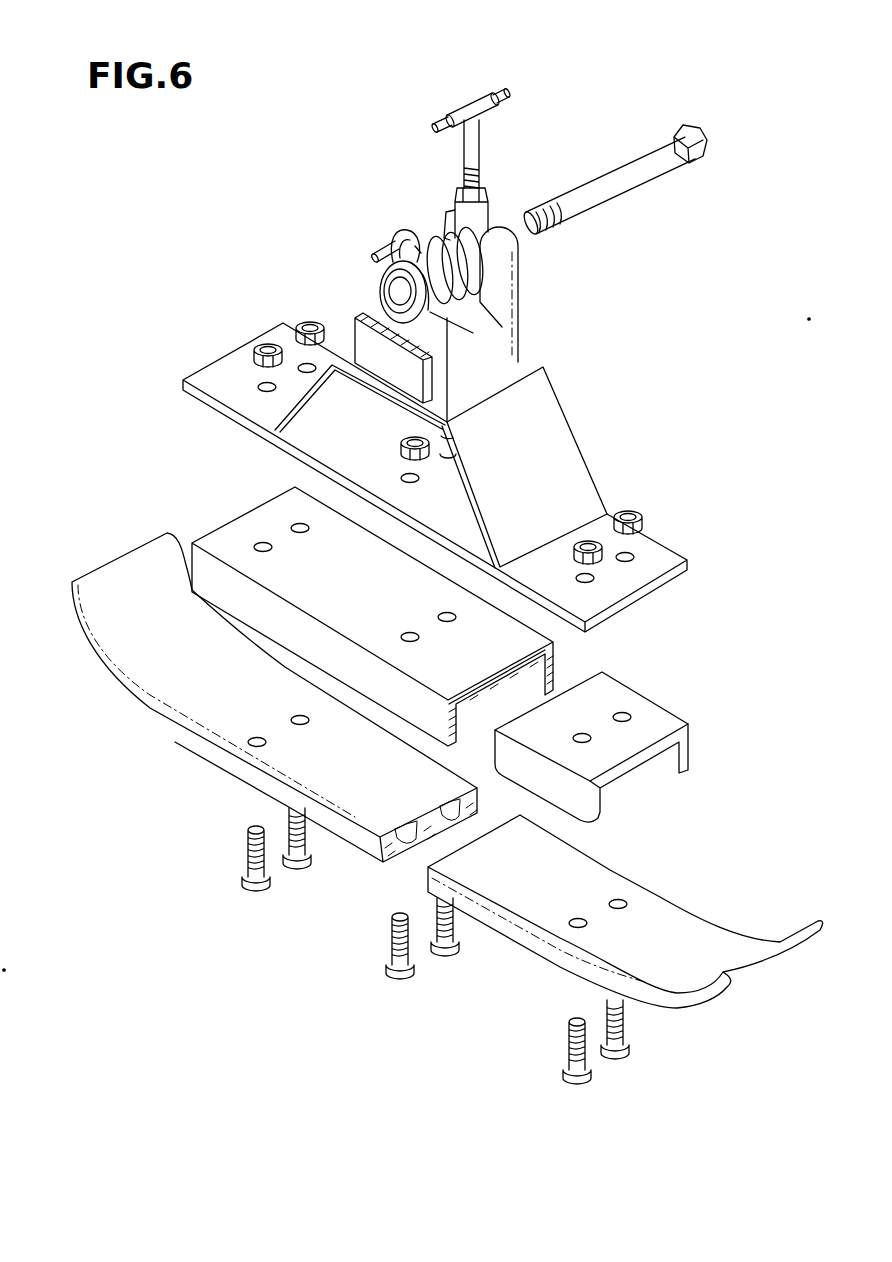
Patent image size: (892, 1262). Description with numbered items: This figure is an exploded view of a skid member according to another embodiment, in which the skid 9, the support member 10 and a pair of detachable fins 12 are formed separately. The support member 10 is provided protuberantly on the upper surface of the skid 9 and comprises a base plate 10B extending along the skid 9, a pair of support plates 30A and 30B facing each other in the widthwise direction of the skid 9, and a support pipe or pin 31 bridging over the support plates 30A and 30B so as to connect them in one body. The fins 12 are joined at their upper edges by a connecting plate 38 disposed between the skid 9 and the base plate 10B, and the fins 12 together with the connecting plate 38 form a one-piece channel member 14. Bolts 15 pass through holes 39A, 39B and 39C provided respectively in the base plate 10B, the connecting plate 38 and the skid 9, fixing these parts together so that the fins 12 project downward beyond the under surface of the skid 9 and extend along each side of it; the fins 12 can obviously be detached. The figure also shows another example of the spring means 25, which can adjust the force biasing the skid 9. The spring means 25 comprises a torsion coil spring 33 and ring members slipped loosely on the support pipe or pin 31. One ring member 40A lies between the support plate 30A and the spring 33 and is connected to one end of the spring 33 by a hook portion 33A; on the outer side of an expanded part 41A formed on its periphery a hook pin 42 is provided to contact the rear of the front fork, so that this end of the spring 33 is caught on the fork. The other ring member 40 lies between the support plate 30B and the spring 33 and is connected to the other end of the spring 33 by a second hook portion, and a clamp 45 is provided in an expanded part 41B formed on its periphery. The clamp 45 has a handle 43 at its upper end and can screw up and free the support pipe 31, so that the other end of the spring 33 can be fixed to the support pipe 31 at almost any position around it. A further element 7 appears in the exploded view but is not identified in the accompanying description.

The bolt 7 is at (617, 190).
The skid 9 is at (213, 713).
The support member 10 is at (587, 443).
The base plate 10B is at (663, 567).
The fins 12 is at (597, 810).
The channel member 14 is at (666, 729).
The bolts 15 is at (390, 957).
The spring means 25 is at (405, 92).
The support plate 30A is at (358, 340).
The support plate 30B is at (503, 297).
The support pipe or pin 31 is at (368, 292).
The torsion coil spring 33 is at (430, 243).
The hook portion 33A is at (418, 250).
The connecting plate 38 is at (655, 728).
The hole 39A is at (630, 550).
The hole 39B is at (630, 712).
The hole 39C is at (618, 904).
The coil spring 40 is at (497, 265).
The ring member 40A is at (380, 278).
The expanded part 41A is at (393, 233).
The expanded part 41B is at (487, 215).
The hook pin 42 is at (376, 259).
The handle 43 is at (485, 88).
The clamp 45 is at (486, 136).